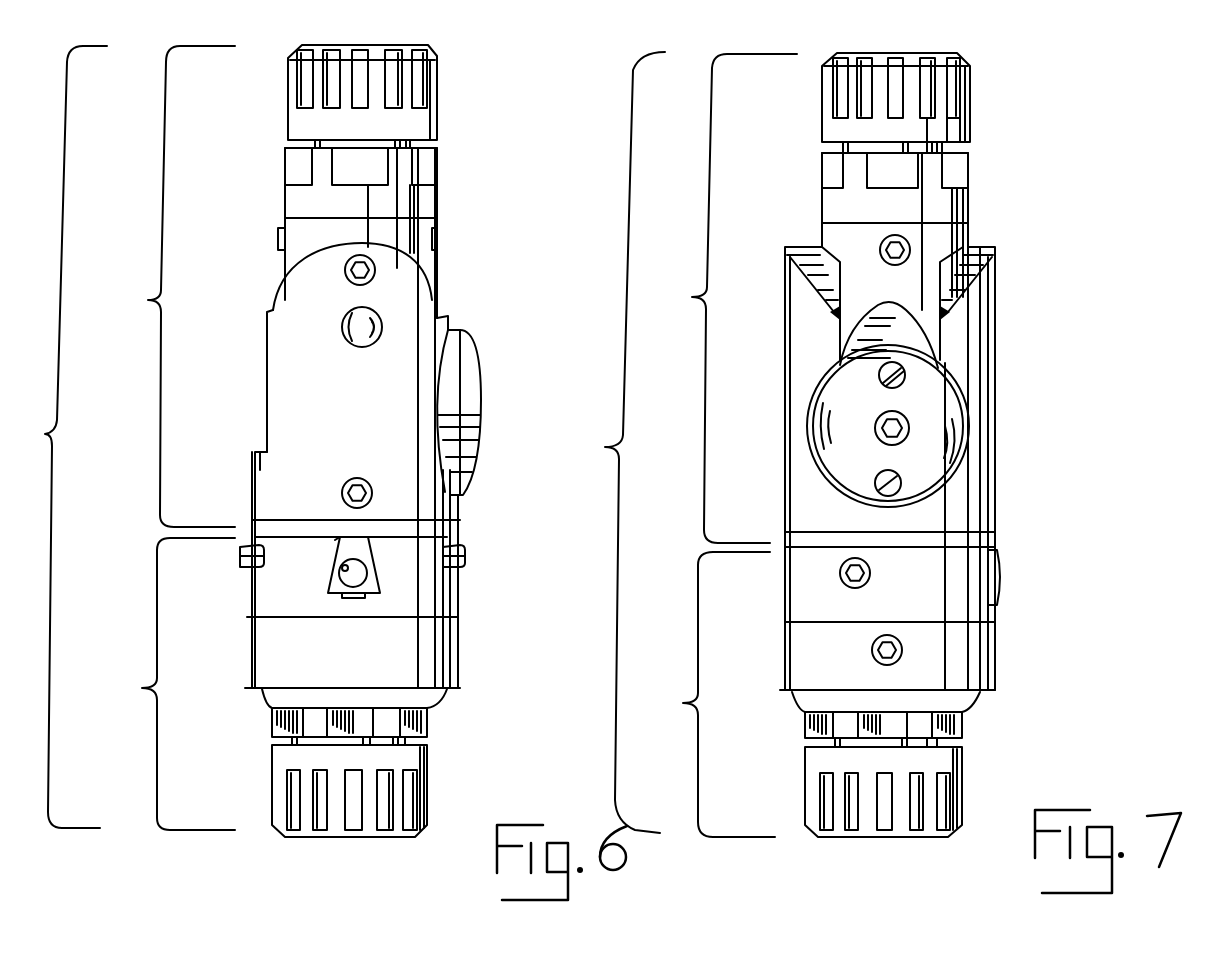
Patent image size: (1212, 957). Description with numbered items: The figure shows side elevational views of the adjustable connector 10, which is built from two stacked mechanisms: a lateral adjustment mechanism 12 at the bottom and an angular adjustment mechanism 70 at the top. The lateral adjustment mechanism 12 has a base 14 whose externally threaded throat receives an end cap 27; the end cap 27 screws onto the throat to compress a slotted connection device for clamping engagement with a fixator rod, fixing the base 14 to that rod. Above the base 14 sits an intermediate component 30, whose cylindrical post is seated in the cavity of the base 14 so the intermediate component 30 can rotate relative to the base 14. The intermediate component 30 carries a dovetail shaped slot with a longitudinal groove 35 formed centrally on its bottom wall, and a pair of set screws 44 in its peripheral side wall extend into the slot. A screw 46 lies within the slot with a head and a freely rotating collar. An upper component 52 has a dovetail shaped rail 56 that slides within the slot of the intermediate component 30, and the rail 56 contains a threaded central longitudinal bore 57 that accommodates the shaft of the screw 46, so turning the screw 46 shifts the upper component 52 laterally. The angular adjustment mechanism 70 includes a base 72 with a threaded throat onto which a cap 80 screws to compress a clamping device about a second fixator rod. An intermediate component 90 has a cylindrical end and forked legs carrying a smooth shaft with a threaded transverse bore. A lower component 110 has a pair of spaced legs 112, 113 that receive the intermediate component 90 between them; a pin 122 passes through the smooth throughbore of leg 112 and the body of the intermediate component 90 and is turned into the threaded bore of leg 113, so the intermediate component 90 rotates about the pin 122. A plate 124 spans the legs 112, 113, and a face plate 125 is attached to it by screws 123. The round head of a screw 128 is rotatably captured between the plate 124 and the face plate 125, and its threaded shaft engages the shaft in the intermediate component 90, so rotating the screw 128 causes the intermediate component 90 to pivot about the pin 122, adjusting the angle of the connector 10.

In FIG. 6, the adjustable connector 10 is at (55, 437).
In FIG. 7, the adjustable connector 10 is at (615, 442).
In FIG. 6, the lateral adjustment mechanism 12 is at (167, 684).
In FIG. 6, the base 14 is at (474, 663).
In FIG. 7, the base 14 is at (1002, 652).
In FIG. 6, the end cap 27 is at (278, 788).
In FIG. 7, the end cap 27 is at (962, 767).
In FIG. 6, the intermediate component 30 is at (474, 603).
In FIG. 7, the intermediate component 30 is at (768, 613).
In FIG. 6, the longitudinal groove 35 is at (358, 598).
In FIG. 6, the set screws 44 is at (243, 556).
In FIG. 6, the screw 46 is at (347, 577).
In FIG. 7, the screw 46 is at (1004, 576).
In FIG. 6, the upper component 52 is at (474, 529).
In FIG. 7, the upper component 52 is at (1008, 531).
In FIG. 6, the dovetail shaped rail 56 is at (345, 547).
In FIG. 6, the threaded central longitudinal bore 57 is at (340, 571).
In FIG. 6, the angular adjustment mechanism 70 is at (165, 286).
In FIG. 6, the base 72 is at (278, 188).
In FIG. 7, the base 72 is at (978, 179).
In FIG. 6, the cap 80 is at (288, 97).
In FIG. 7, the cap 80 is at (968, 107).
In FIG. 6, the intermediate component 90 is at (278, 262).
In FIG. 7, the intermediate component 90 is at (980, 223).
In FIG. 6, the lower component 110 is at (258, 418).
In FIG. 7, the lower component 110 is at (1008, 450).
In FIG. 7, the leg 112 is at (995, 298).
In FIG. 7, the leg 113 is at (788, 290).
In FIG. 6, the pin 122 is at (370, 323).
In FIG. 7, the screws 123 is at (903, 378).
In FIG. 6, the plate 124 is at (465, 335).
In FIG. 6, the face plate 125 is at (470, 368).
In FIG. 7, the face plate 125 is at (937, 400).
In FIG. 7, the screw 128 is at (910, 431).